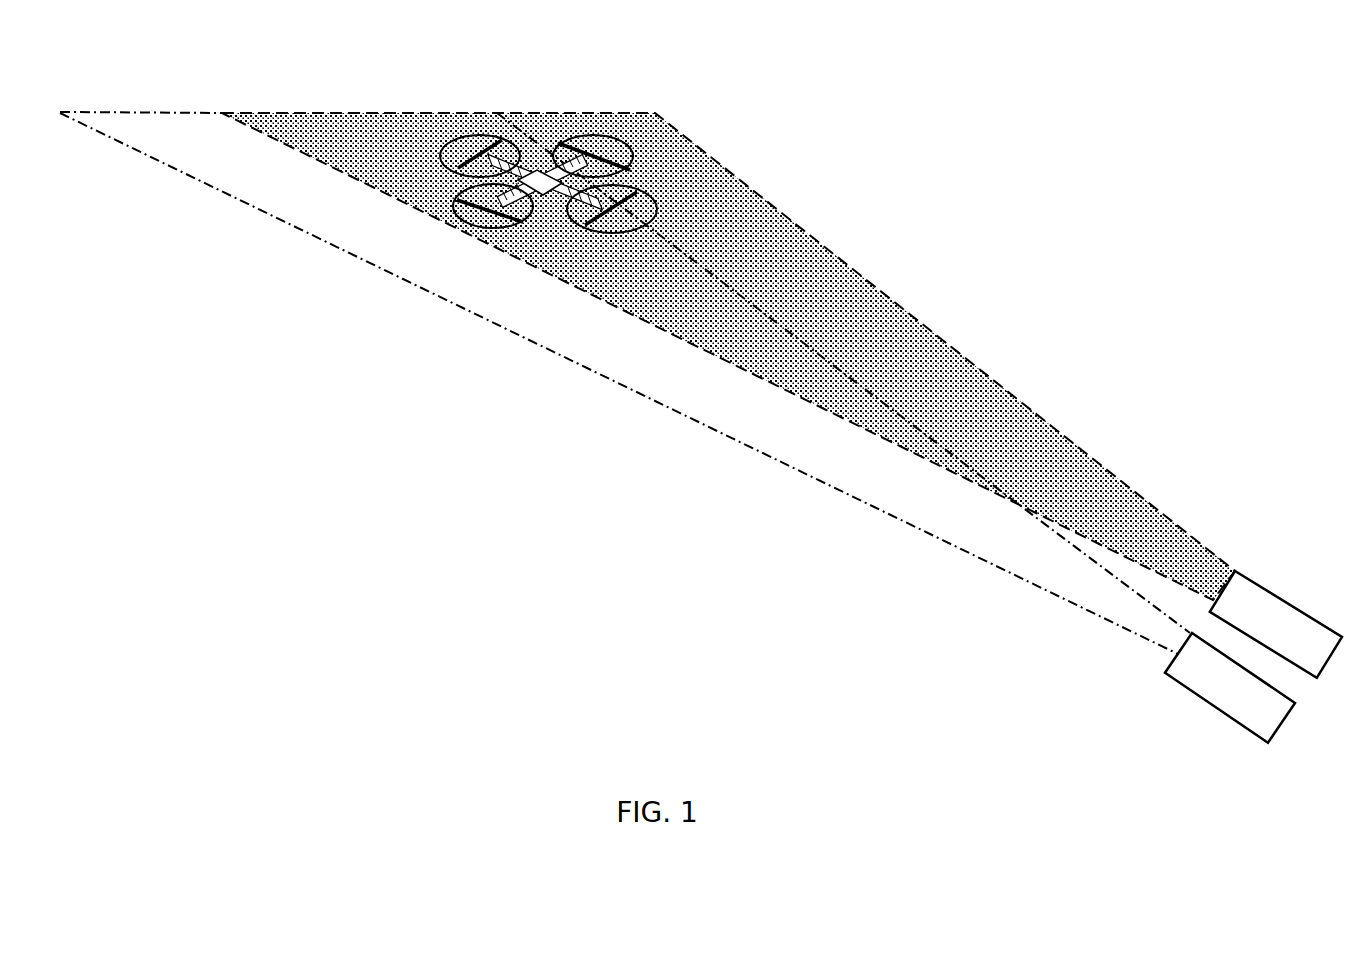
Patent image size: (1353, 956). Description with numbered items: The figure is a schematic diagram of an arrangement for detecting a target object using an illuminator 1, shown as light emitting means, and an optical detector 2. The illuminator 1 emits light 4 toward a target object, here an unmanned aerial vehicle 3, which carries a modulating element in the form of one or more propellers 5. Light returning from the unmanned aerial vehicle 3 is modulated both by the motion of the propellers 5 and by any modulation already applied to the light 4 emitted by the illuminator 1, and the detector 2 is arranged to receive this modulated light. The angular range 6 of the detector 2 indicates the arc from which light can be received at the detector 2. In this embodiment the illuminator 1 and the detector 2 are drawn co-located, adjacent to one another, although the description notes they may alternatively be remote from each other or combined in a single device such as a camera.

The illuminator 1 is at (1288, 620).
The optical detector 2 is at (1237, 713).
The unmanned aerial vehicle 3 is at (548, 135).
The light 4 is at (855, 297).
The propellers 5 is at (587, 147).
The angular range of the detector 6 is at (848, 483).